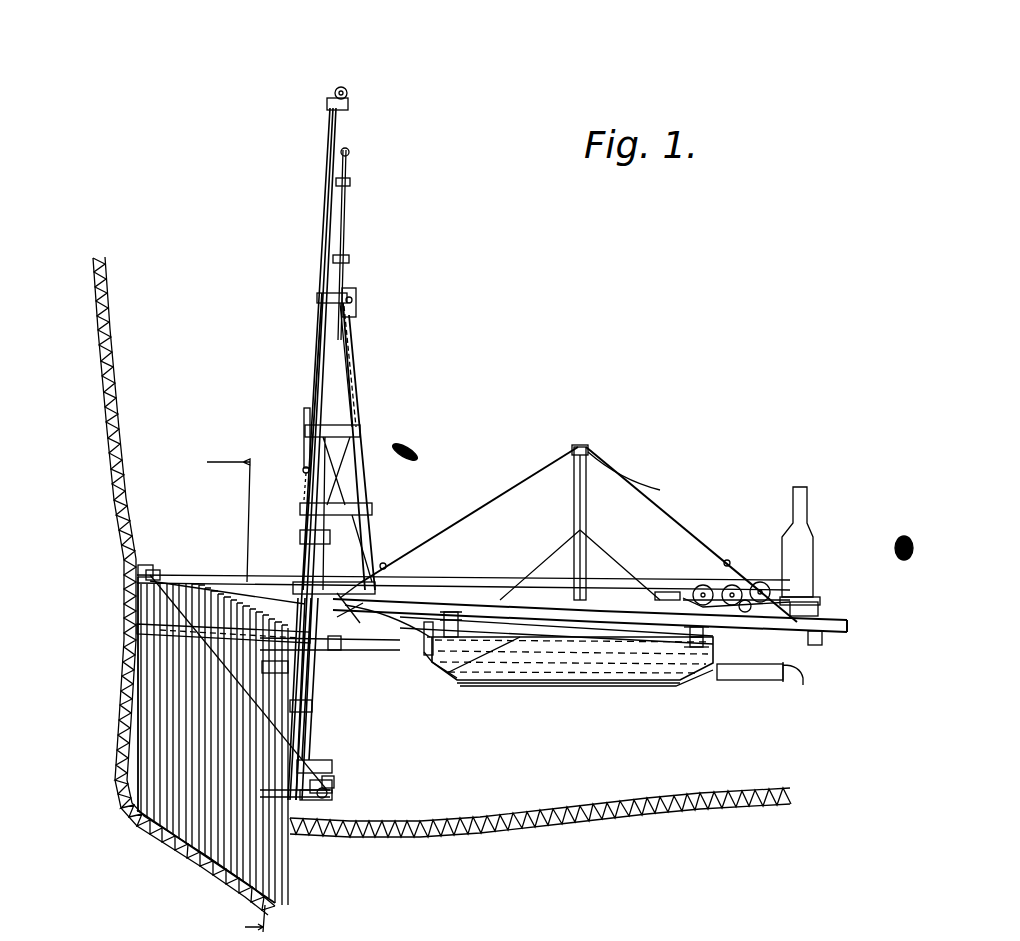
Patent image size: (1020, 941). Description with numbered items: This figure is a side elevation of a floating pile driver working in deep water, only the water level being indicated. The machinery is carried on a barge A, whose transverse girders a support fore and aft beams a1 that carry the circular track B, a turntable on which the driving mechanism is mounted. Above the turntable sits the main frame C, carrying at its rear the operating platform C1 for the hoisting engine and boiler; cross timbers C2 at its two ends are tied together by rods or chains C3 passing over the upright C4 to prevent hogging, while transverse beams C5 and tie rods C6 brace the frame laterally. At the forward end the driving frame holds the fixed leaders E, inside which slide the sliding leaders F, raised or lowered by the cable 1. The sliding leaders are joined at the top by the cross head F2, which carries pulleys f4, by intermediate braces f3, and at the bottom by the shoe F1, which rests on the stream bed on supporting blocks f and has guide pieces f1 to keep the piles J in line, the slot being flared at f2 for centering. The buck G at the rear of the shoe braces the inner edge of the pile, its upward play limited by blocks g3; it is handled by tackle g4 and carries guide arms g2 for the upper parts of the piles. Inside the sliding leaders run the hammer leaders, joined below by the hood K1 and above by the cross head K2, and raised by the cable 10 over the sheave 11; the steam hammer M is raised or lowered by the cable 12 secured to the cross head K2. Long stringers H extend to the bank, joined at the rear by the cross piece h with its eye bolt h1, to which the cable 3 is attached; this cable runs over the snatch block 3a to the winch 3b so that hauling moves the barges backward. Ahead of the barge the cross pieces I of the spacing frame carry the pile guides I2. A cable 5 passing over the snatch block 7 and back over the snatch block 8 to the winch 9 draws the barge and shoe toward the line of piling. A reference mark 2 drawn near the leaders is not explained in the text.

The piles J is at (142, 808).
The cable 5 is at (200, 578).
The snatch block 8 is at (160, 572).
The pile guides I2 is at (425, 623).
The cross pieces I is at (333, 650).
The reference line 2 is at (242, 688).
The sliding leaders F is at (322, 198).
The cross head F2 is at (350, 106).
The pulleys f4 is at (348, 90).
The cross head K2 is at (350, 158).
The intermediate braces f3 is at (350, 183).
The cable 12 is at (352, 260).
The cable 10 is at (358, 306).
The fixed leaders E is at (315, 338).
The sheave 11 is at (352, 380).
The steam hammer M is at (305, 422).
The hood K1 is at (303, 473).
The tackle g4 is at (302, 536).
The buck G is at (315, 735).
The cable 1 is at (318, 706).
The guide arms g2 is at (313, 692).
The blocks g3 is at (333, 764).
The flared end f2 is at (336, 784).
The supporting blocks f is at (330, 798).
The shoe F1 is at (318, 810).
The guide pieces f1 is at (262, 793).
The snatch block 7 is at (490, 576).
The main frame C is at (455, 600).
The snatch block 3a is at (389, 567).
The rods or chains C3 is at (520, 484).
The upright C4 is at (590, 454).
The tie rods or braces C6 is at (622, 478).
The transverse beams C5 is at (610, 560).
The cable 3 is at (665, 590).
The winch 9 is at (703, 584).
The winch 3b is at (738, 578).
The operating platform C1 is at (815, 605).
The cross timbers C2 is at (820, 645).
The fore and aft beams a1 is at (708, 630).
The transverse girders a is at (708, 647).
The circular track B is at (538, 640).
The barge A is at (578, 684).
The stringers H is at (712, 690).
The cross piece h is at (773, 682).
The eye bolt h1 is at (790, 670).